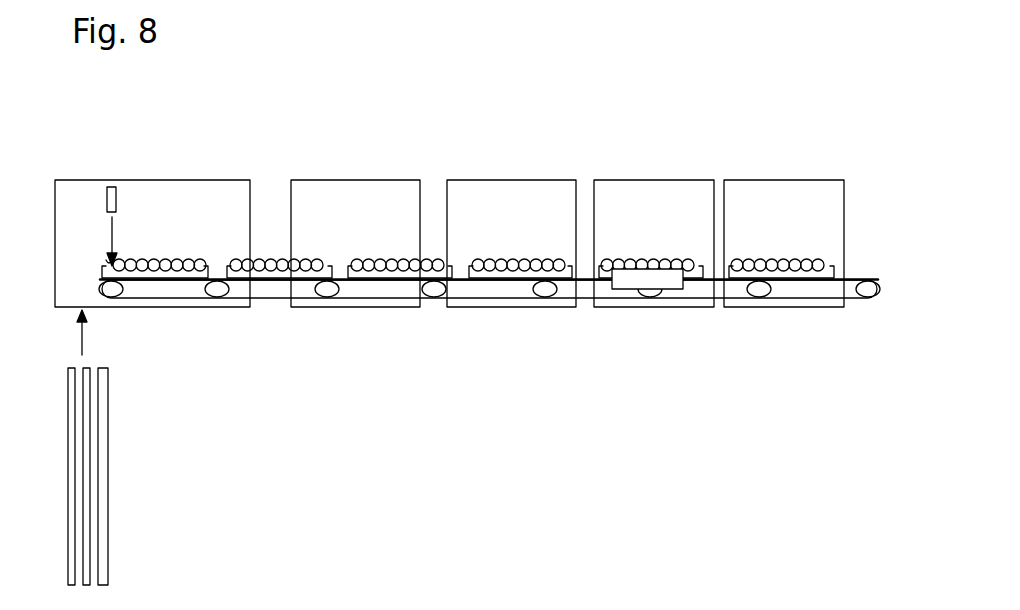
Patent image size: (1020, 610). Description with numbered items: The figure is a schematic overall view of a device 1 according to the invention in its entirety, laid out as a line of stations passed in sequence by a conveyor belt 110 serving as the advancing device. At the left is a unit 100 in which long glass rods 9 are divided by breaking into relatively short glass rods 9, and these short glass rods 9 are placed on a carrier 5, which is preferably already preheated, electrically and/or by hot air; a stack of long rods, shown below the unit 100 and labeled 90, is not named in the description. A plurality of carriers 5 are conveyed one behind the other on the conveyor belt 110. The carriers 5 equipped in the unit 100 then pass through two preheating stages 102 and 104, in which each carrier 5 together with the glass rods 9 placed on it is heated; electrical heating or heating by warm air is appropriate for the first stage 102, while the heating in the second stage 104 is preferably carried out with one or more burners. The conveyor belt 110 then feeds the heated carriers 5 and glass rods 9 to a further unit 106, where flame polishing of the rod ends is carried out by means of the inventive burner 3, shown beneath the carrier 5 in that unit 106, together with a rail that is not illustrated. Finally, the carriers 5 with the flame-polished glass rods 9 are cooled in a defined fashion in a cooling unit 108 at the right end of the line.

The device 1 is at (76, 104).
The burner 3 is at (652, 279).
The carrier 5 is at (207, 267).
The glass rods 9 is at (118, 203).
The stack of plates 90 is at (106, 448).
The unit 100 is at (117, 180).
The first preheating stage 102 is at (347, 180).
The second preheating stage 104 is at (472, 180).
The further unit 106 is at (630, 180).
The cooling unit 108 is at (760, 180).
The conveyor belt 110 is at (260, 298).